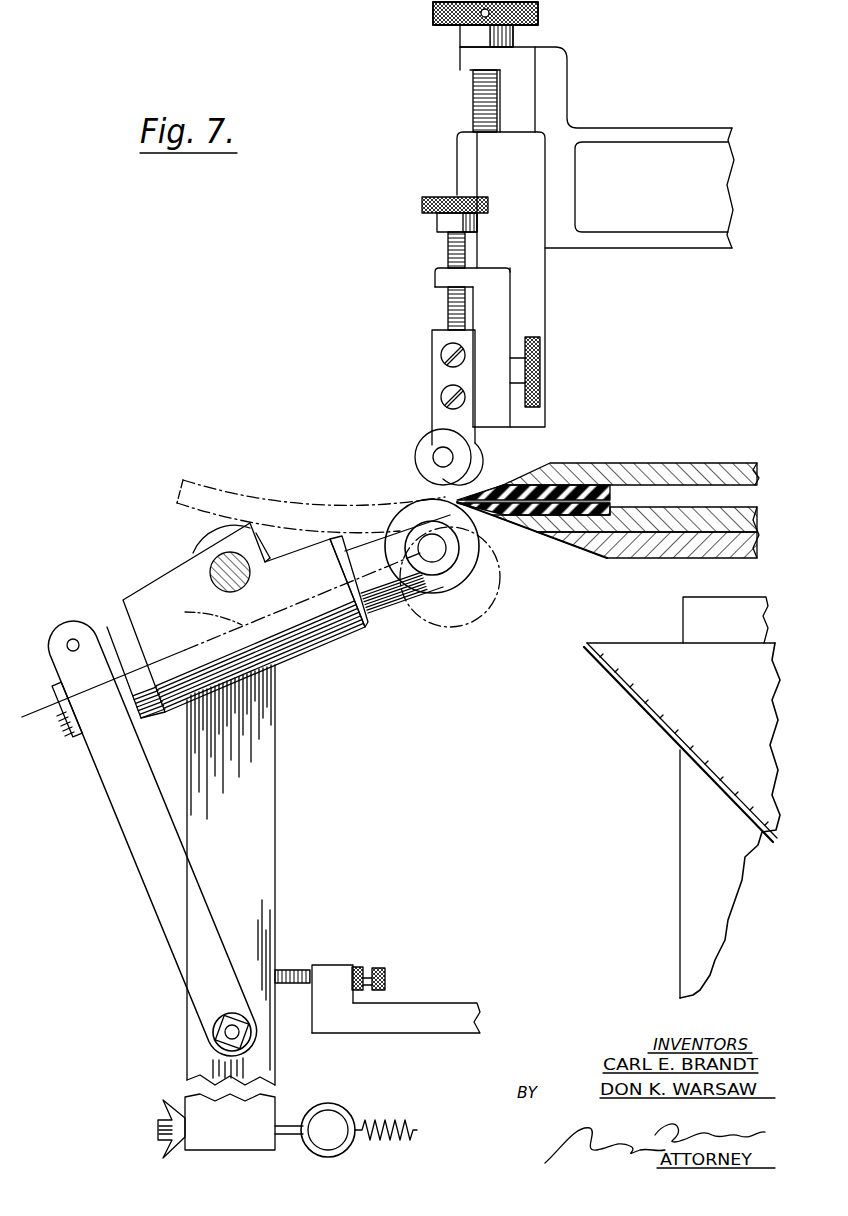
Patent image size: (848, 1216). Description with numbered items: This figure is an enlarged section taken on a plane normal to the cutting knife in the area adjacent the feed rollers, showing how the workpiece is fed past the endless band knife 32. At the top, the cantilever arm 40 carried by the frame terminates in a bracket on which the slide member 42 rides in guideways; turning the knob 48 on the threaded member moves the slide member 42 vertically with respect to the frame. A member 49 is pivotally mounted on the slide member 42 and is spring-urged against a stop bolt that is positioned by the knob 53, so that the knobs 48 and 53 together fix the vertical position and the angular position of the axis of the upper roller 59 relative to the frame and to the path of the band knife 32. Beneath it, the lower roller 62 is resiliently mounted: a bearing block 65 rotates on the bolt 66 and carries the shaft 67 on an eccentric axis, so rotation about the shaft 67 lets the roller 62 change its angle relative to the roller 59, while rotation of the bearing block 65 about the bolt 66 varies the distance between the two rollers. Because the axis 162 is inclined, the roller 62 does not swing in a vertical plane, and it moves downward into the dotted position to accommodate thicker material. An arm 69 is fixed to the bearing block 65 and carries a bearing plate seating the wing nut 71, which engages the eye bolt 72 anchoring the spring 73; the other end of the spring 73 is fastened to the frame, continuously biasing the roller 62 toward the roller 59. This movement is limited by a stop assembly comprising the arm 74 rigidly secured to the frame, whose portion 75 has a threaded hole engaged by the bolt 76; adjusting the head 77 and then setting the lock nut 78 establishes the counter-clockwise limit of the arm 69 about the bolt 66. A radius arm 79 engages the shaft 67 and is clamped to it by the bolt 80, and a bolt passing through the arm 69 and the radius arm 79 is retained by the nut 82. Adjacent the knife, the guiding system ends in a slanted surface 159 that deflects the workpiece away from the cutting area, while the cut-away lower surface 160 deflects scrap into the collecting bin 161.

The knob 48 is at (541, 14).
The cantilever arm 40 is at (620, 128).
The slide member 42 is at (480, 160).
The knob 53 is at (422, 205).
The member 49 is at (432, 343).
The roller 59 is at (418, 447).
The endless band knife 32 is at (462, 486).
The slanted surface 159 is at (465, 478).
The surface 160 is at (540, 548).
The lower roller 62 is at (406, 497).
The bearing block 65 is at (165, 580).
The bolt 66 is at (237, 553).
The shaft 67 is at (370, 546).
The axis 162 is at (198, 613).
The bolt 80 is at (69, 640).
The radius arm 79 is at (137, 862).
The arm 69 is at (276, 845).
The nut 82 is at (213, 1027).
The wing nut 71 is at (160, 1110).
The eye bolt 72 is at (330, 1103).
The spring 73 is at (395, 1122).
The arm 74 is at (440, 1010).
The portion 75 is at (333, 965).
The bolt 76 is at (294, 970).
The head 77 is at (385, 970).
The lock nut 78 is at (358, 967).
The collecting bin 161 is at (650, 678).